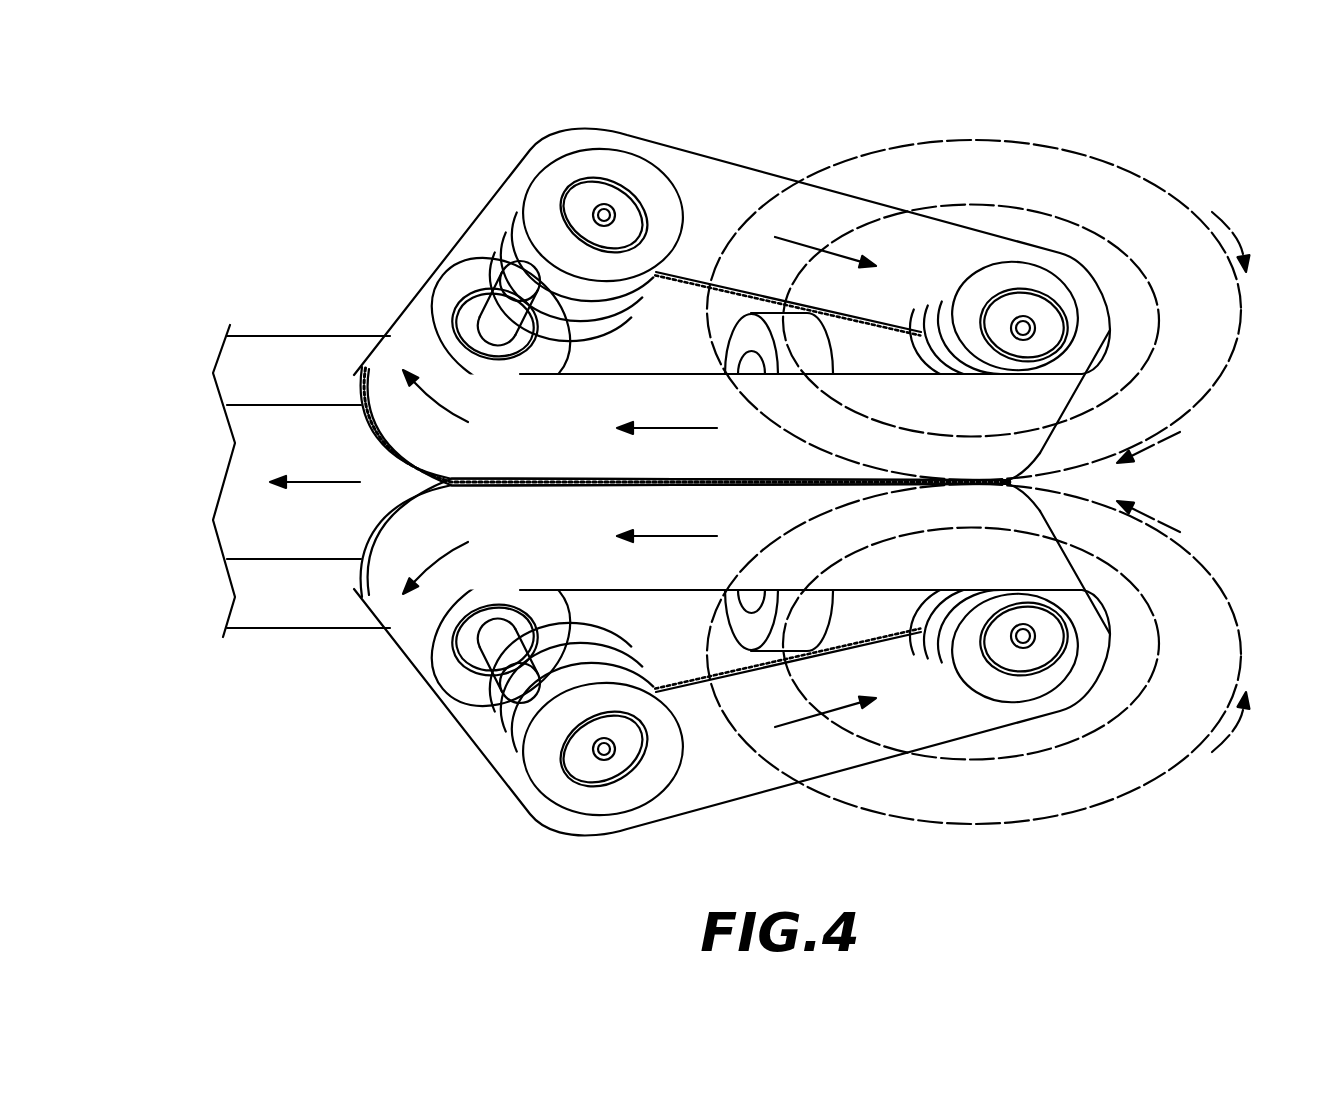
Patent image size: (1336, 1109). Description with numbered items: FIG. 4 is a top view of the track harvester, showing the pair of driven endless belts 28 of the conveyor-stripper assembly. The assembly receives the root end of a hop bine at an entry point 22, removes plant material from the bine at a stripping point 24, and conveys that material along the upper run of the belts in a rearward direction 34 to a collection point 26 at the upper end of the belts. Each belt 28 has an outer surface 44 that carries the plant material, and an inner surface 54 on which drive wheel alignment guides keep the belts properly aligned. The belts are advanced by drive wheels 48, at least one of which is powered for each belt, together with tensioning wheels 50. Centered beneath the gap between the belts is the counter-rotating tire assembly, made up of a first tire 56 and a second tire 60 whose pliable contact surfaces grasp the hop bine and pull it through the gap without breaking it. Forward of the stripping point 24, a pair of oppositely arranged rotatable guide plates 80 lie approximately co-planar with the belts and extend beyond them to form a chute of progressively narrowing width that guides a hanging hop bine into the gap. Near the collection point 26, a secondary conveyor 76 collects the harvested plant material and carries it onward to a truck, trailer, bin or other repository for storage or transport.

The entry point 22 is at (1023, 481).
The stripping point 24 is at (775, 478).
The collection point 26 is at (291, 449).
The driven endless belts 28 is at (714, 170).
The rearward direction 34 is at (668, 427).
The outer surface 44 is at (503, 442).
The drive wheels 48 is at (457, 282).
The tensioning wheels 50 is at (606, 163).
The inner surface 54 is at (700, 217).
The first tire 56 is at (753, 634).
The second tire 60 is at (753, 330).
The secondary conveyor 76 is at (245, 508).
The rotatable guide plates 80 is at (1093, 236).